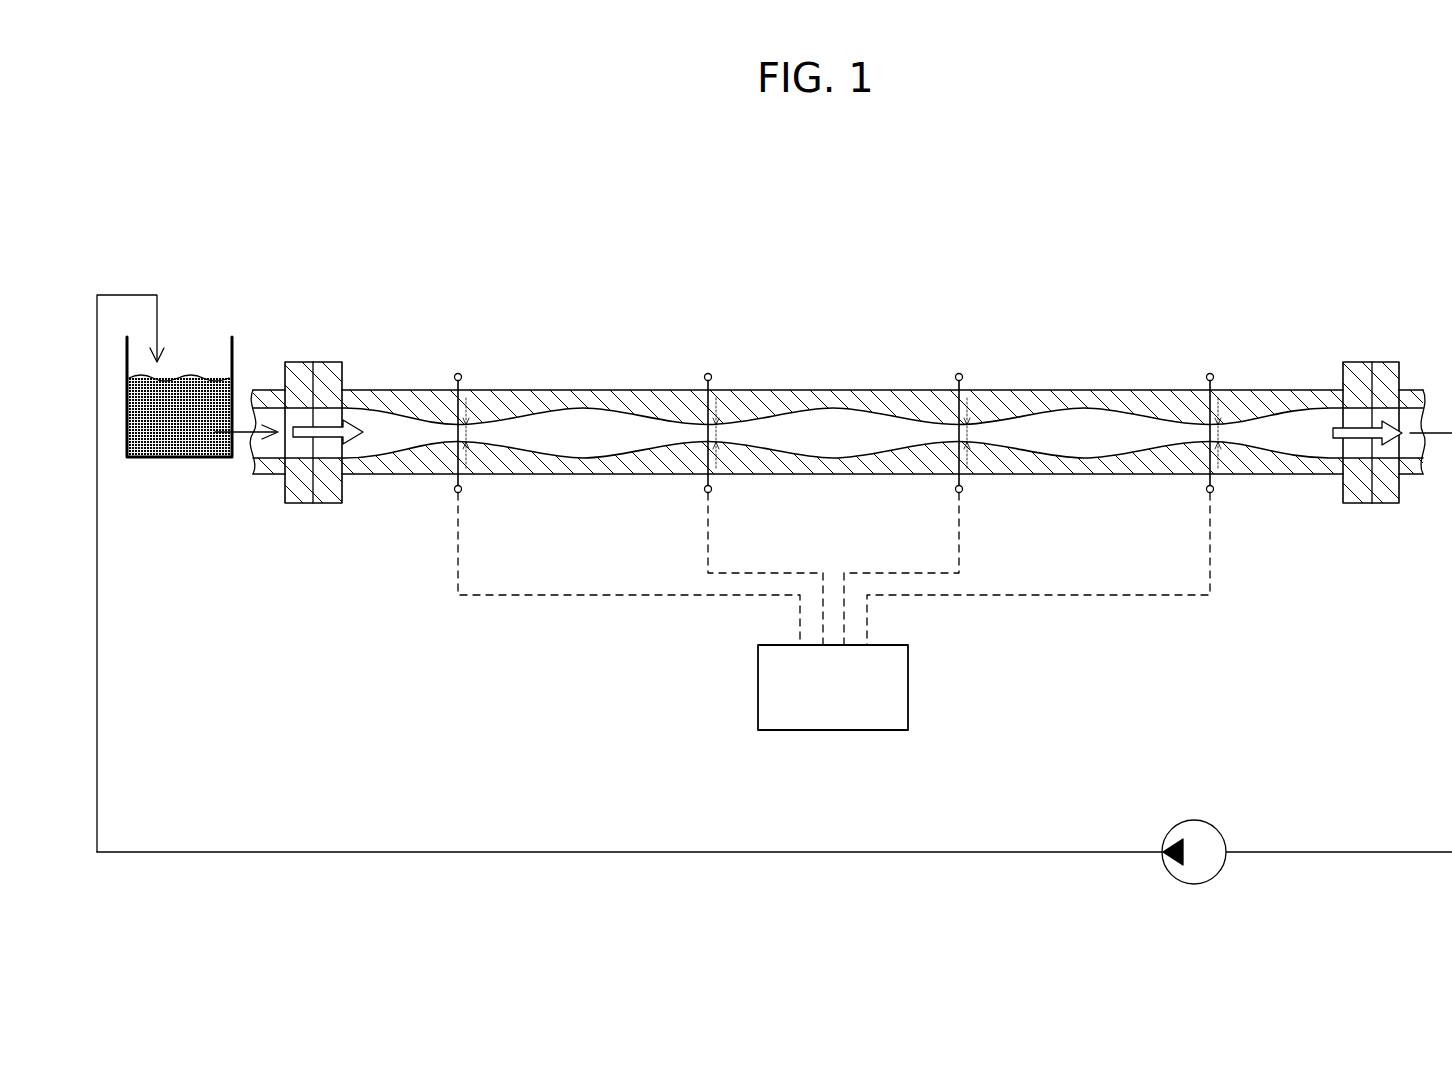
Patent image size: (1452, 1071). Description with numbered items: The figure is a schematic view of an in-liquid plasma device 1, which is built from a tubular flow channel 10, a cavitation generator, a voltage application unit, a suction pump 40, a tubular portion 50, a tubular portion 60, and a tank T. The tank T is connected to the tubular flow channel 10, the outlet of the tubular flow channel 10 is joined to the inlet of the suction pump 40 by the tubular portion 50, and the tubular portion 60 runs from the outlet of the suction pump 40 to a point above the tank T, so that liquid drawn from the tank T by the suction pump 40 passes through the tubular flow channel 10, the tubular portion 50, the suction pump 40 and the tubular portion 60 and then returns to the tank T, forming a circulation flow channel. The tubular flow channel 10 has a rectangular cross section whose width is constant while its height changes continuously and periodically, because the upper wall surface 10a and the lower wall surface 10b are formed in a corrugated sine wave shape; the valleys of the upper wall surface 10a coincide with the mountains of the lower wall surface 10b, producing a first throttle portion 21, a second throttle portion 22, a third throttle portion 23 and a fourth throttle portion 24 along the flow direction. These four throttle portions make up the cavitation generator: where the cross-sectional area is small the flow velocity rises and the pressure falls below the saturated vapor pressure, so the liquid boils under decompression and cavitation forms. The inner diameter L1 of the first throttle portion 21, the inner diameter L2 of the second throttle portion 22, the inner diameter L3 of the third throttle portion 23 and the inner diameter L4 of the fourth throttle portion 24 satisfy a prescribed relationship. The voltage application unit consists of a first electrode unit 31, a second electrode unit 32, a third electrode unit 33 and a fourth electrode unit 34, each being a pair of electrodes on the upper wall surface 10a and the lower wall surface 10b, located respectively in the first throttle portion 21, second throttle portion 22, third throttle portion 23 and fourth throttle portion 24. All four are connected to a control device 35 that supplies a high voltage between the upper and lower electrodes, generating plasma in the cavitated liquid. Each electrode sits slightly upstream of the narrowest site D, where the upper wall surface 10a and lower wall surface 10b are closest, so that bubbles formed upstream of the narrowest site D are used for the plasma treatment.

The in-liquid plasma device 1 is at (1053, 258).
The tubular flow channel 10 is at (834, 476).
The upper wall surface 10a is at (598, 412).
The lower wall surface 10b is at (599, 455).
The first throttle portion 21 is at (446, 374).
The second throttle portion 22 is at (696, 374).
The third throttle portion 23 is at (947, 374).
The fourth throttle portion 24 is at (1198, 374).
The first electrode unit 31 is at (463, 490).
The second electrode unit 32 is at (713, 490).
The third electrode unit 33 is at (964, 490).
The fourth electrode unit 34 is at (1215, 490).
The control device 35 is at (909, 689).
The suction pump 40 is at (1196, 820).
The tubular portion 50 is at (1451, 632).
The tubular portion 60 is at (98, 657).
The tank T is at (178, 461).
The narrowest site D is at (472, 430).
The inner diameter of the first throttle portion L1 is at (452, 440).
The inner diameter of the second throttle portion L2 is at (702, 440).
The inner diameter of the third throttle portion L3 is at (953, 440).
The inner diameter of the fourth throttle portion L4 is at (1204, 440).